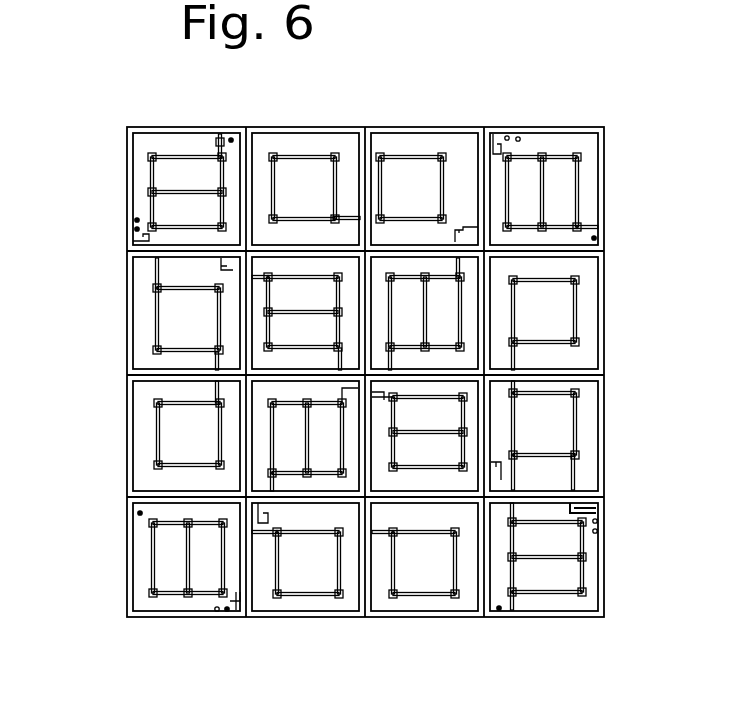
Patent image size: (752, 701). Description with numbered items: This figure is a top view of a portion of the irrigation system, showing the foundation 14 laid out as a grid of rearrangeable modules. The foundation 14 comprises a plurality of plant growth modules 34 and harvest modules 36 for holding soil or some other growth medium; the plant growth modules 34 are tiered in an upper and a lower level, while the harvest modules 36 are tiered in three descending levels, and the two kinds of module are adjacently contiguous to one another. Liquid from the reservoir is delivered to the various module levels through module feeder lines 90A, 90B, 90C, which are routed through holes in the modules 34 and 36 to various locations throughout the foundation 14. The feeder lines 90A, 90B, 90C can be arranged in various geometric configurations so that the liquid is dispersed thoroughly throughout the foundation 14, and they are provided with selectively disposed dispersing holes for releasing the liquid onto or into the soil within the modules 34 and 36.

The foundation 14 is at (92, 390).
The plant growth module 34 is at (185, 569).
The harvest module 36 is at (438, 577).
The module feeder line 90A is at (511, 607).
The module feeder line 90B is at (499, 608).
The module feeder line 90C is at (217, 610).